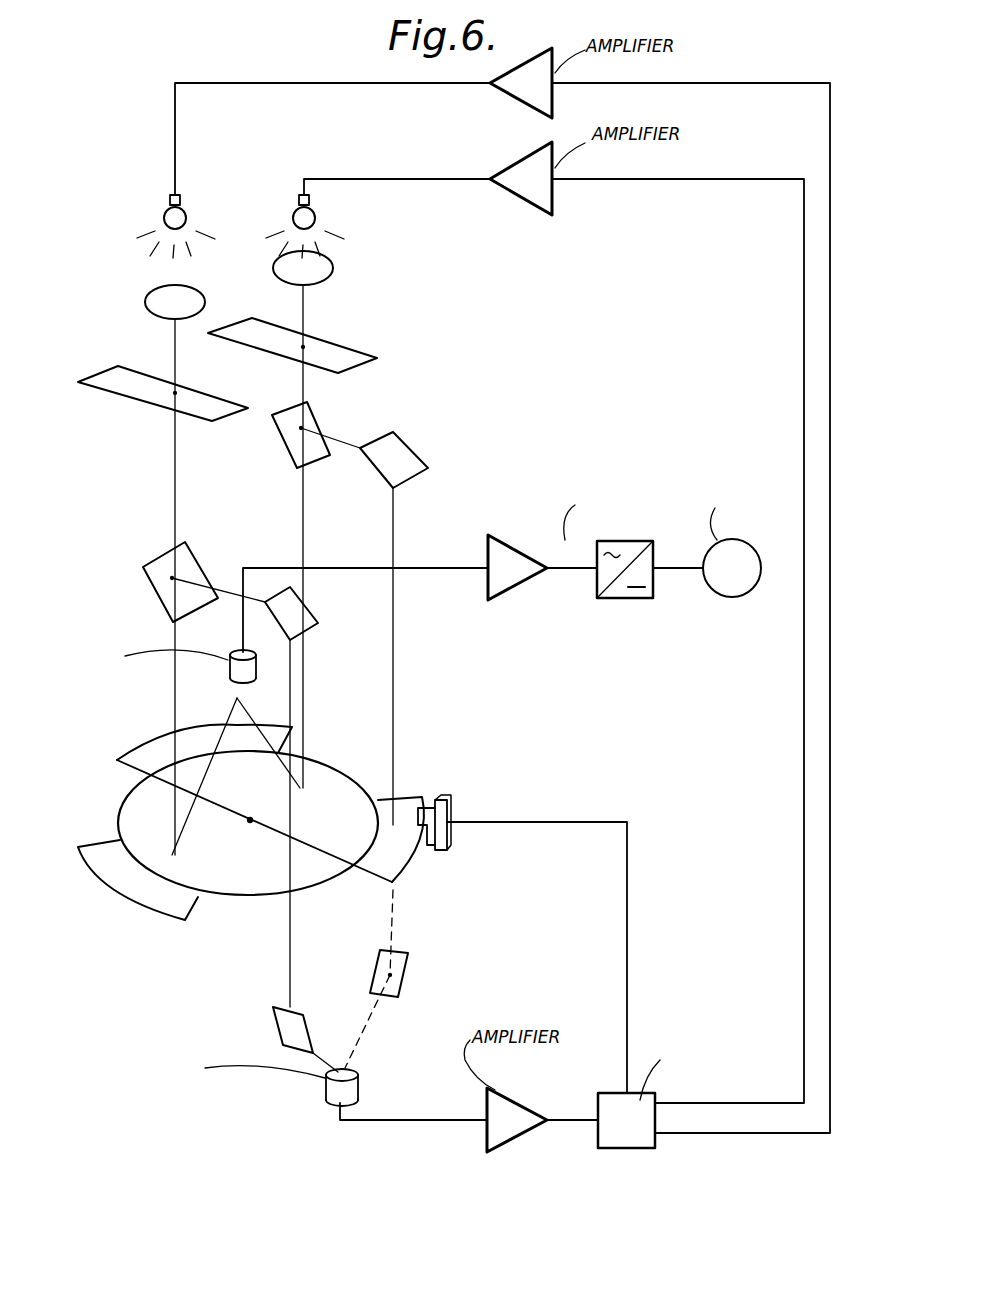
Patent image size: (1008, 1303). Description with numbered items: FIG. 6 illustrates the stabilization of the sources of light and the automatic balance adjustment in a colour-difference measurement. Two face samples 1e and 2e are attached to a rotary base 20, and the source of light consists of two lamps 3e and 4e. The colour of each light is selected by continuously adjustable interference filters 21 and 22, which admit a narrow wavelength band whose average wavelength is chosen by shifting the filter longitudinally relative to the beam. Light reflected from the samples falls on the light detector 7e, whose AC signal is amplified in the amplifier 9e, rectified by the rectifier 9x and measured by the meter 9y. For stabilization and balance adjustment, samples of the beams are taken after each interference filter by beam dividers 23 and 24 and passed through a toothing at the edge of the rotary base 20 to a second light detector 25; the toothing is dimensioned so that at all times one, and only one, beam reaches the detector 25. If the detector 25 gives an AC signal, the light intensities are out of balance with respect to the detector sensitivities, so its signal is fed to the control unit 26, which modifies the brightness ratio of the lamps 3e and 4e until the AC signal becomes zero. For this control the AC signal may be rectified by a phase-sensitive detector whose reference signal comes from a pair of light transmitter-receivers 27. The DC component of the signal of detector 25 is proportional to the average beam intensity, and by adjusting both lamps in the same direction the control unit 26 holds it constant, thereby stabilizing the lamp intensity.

The lamp 3e is at (163, 212).
The lamp 4e is at (292, 212).
The interference filter 21 is at (135, 388).
The interference filter 22 is at (333, 358).
The beam divider 23 is at (165, 592).
The beam divider 24 is at (312, 425).
The light detector 7e is at (232, 672).
The amplifier 9e is at (517, 576).
The rectifier 9x is at (636, 600).
The meter 9y is at (722, 596).
The face sample 1e is at (123, 812).
The face sample 2e is at (325, 775).
The rotary base 20 is at (232, 910).
The pair of light transmitter-receivers 27 is at (452, 808).
The light detector 25 is at (318, 1090).
The control unit 26 is at (606, 1112).